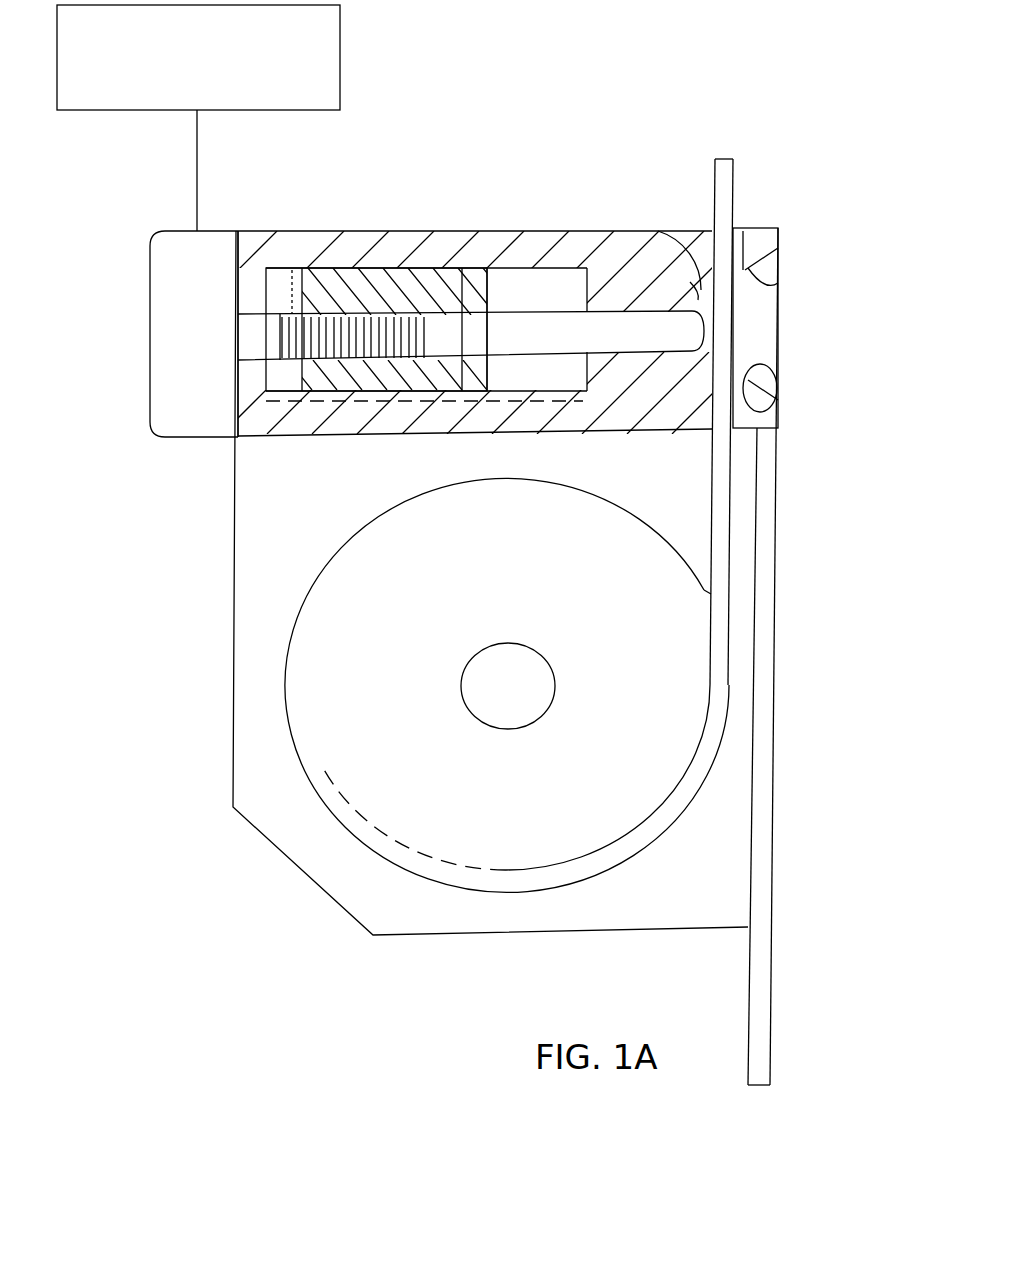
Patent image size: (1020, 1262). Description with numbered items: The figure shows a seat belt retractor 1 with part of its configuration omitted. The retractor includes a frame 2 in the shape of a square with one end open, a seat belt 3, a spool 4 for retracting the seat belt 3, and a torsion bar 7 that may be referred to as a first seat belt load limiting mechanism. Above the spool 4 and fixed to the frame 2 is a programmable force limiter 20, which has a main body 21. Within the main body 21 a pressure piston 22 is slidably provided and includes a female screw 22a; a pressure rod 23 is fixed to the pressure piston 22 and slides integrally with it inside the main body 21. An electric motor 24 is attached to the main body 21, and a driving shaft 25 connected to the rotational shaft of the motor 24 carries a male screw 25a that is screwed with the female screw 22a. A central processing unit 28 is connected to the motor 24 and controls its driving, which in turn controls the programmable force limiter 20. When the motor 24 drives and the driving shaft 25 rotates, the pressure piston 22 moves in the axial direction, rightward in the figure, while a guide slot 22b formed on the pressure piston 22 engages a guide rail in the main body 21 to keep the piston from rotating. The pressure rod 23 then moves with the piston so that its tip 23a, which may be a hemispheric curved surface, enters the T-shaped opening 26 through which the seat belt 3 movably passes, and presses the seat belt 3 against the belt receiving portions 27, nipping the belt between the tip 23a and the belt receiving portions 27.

The seat belt retractor 1 is at (222, 882).
The frame 2 is at (252, 737).
The seat belt 3 is at (712, 519).
The spool 4 is at (523, 602).
The torsion bar 7 is at (523, 703).
The programmable force limiter 20 is at (475, 294).
The main body 21 is at (660, 432).
The pressure piston 22 is at (397, 392).
The female screw 22a is at (368, 264).
The guide slot 22b is at (418, 436).
The pressure rod 23 is at (583, 351).
The tip 23a is at (657, 228).
The electric motor 24 is at (163, 405).
The driving shaft 25 is at (238, 392).
The male screw 25a is at (283, 262).
The T-shaped opening 26 is at (760, 322).
The belt receiving portions 27 is at (760, 278).
The central processing unit 28 is at (330, 72).